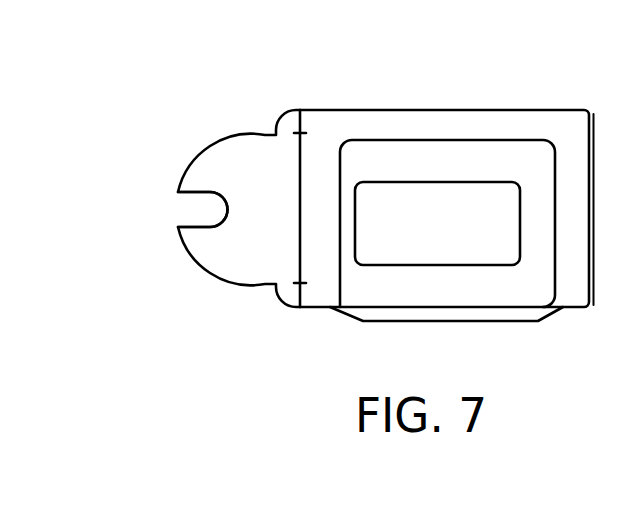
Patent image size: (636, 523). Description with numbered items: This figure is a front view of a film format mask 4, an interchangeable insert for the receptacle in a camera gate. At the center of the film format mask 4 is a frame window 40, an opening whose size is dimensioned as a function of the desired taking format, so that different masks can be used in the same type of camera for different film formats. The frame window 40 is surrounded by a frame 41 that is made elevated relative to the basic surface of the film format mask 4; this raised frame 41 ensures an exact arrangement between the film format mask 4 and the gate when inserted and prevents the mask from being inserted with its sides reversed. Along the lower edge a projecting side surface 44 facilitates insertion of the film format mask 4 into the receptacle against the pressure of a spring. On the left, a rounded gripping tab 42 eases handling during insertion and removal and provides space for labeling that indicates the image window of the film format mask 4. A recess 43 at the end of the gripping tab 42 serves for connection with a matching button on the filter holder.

The film format mask 4 is at (543, 125).
The frame window 40 is at (503, 252).
The frame 41 is at (383, 287).
The gripping tab 42 is at (222, 262).
The recess 43 is at (193, 193).
The projecting side surface 44 is at (537, 313).